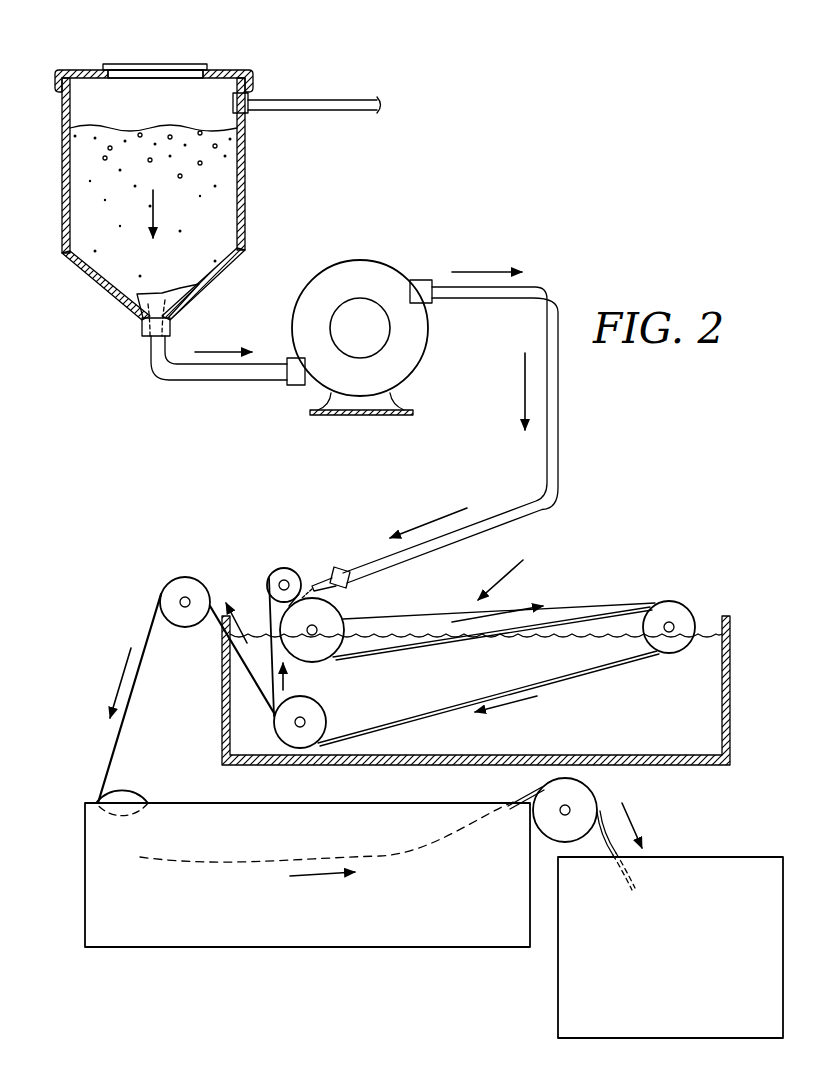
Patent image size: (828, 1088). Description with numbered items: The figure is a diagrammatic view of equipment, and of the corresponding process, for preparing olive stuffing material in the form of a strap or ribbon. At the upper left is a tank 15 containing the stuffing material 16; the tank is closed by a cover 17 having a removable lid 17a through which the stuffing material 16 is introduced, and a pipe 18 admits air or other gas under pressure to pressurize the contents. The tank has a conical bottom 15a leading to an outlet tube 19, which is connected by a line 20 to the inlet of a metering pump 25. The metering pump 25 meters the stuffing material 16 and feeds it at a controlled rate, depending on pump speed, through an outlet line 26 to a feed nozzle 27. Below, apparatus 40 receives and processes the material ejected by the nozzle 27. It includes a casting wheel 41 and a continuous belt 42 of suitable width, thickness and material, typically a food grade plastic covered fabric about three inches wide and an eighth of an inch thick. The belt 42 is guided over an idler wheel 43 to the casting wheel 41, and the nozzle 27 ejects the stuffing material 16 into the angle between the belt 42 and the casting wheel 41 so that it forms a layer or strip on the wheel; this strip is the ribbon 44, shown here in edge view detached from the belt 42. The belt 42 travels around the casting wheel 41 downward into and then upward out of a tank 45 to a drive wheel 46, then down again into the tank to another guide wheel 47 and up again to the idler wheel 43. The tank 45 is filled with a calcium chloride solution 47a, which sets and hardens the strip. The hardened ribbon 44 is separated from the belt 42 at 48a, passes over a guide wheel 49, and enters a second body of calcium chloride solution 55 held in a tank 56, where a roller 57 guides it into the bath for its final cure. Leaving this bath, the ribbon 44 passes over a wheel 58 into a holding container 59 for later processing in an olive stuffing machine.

The tank 15 is at (245, 208).
The conical bottom 15a is at (88, 277).
The stuffing material 16 is at (215, 241).
The cover 17 is at (227, 68).
The removable lid 17a is at (153, 63).
The pipe 18 is at (318, 98).
The outlet tube 19 is at (140, 322).
The line 20 is at (152, 367).
The metering pump 25 is at (390, 262).
The outlet line 26 is at (546, 288).
The feed nozzle 27 is at (333, 567).
The apparatus 40 is at (515, 565).
The casting wheel 41 is at (345, 610).
The continuous belt 42 is at (378, 656).
The idler wheel 43 is at (283, 568).
The ribbon 44 is at (219, 604).
The tank 45 is at (730, 690).
The drive wheel 46 is at (672, 612).
The guide wheel 47 is at (316, 720).
The calcium chloride solution 47a is at (672, 703).
The separation point 48a is at (273, 712).
The guide wheel 49 is at (172, 586).
The second body of calcium chloride solution 55 is at (485, 896).
The tank 56 is at (85, 915).
The roller 57 is at (136, 797).
The wheel 58 is at (583, 795).
The holding container 59 is at (723, 857).